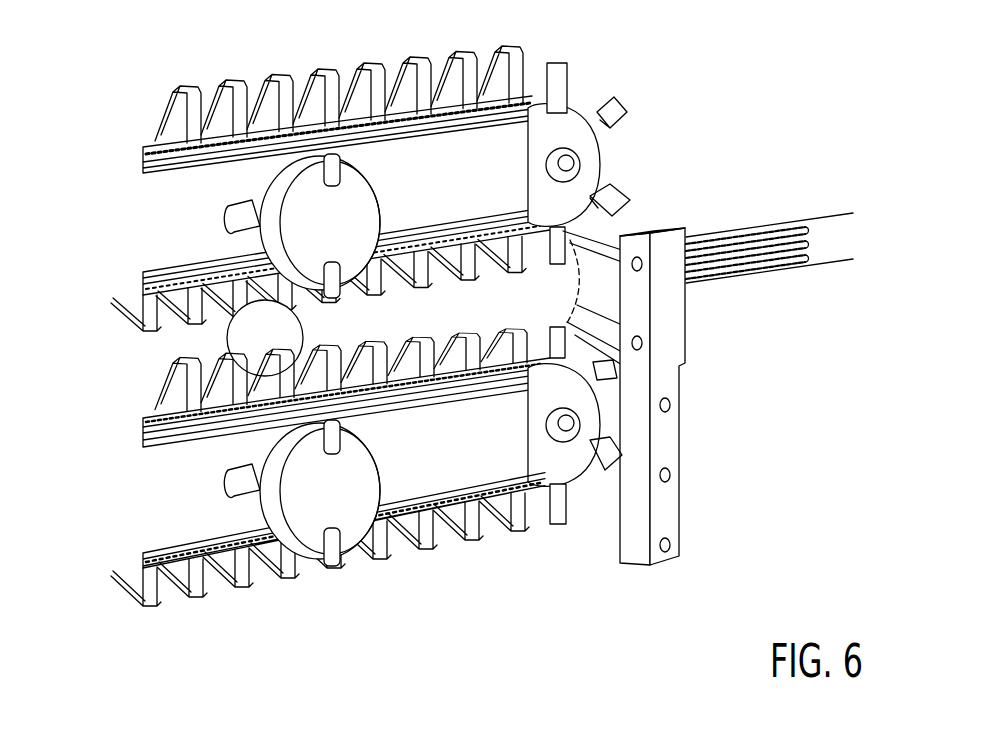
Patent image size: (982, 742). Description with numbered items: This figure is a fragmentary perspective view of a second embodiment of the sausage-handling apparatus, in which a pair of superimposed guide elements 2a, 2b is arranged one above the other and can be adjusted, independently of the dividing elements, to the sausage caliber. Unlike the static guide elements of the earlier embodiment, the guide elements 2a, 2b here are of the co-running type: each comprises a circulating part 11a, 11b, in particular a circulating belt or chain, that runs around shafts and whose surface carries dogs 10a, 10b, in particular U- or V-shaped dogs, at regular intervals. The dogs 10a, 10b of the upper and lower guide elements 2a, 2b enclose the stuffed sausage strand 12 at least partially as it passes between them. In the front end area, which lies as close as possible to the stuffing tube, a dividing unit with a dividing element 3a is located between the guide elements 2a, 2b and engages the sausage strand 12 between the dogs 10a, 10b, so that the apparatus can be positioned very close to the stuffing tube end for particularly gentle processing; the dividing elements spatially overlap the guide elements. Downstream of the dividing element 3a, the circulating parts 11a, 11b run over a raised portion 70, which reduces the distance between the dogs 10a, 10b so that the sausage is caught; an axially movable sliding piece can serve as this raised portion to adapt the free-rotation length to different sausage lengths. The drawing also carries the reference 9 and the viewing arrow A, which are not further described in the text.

The guide element 2a is at (548, 58).
The guide element 2b is at (546, 535).
The dividing element 3a is at (597, 238).
The cable bundle 9 is at (828, 258).
The dogs 10a is at (367, 70).
The dogs 10b is at (376, 558).
The circulating part 11a is at (148, 172).
The circulating part 11b is at (146, 553).
The stuffed sausage strand 12 is at (230, 338).
The raised portion 70 is at (298, 415).
The viewing direction A is at (101, 313).